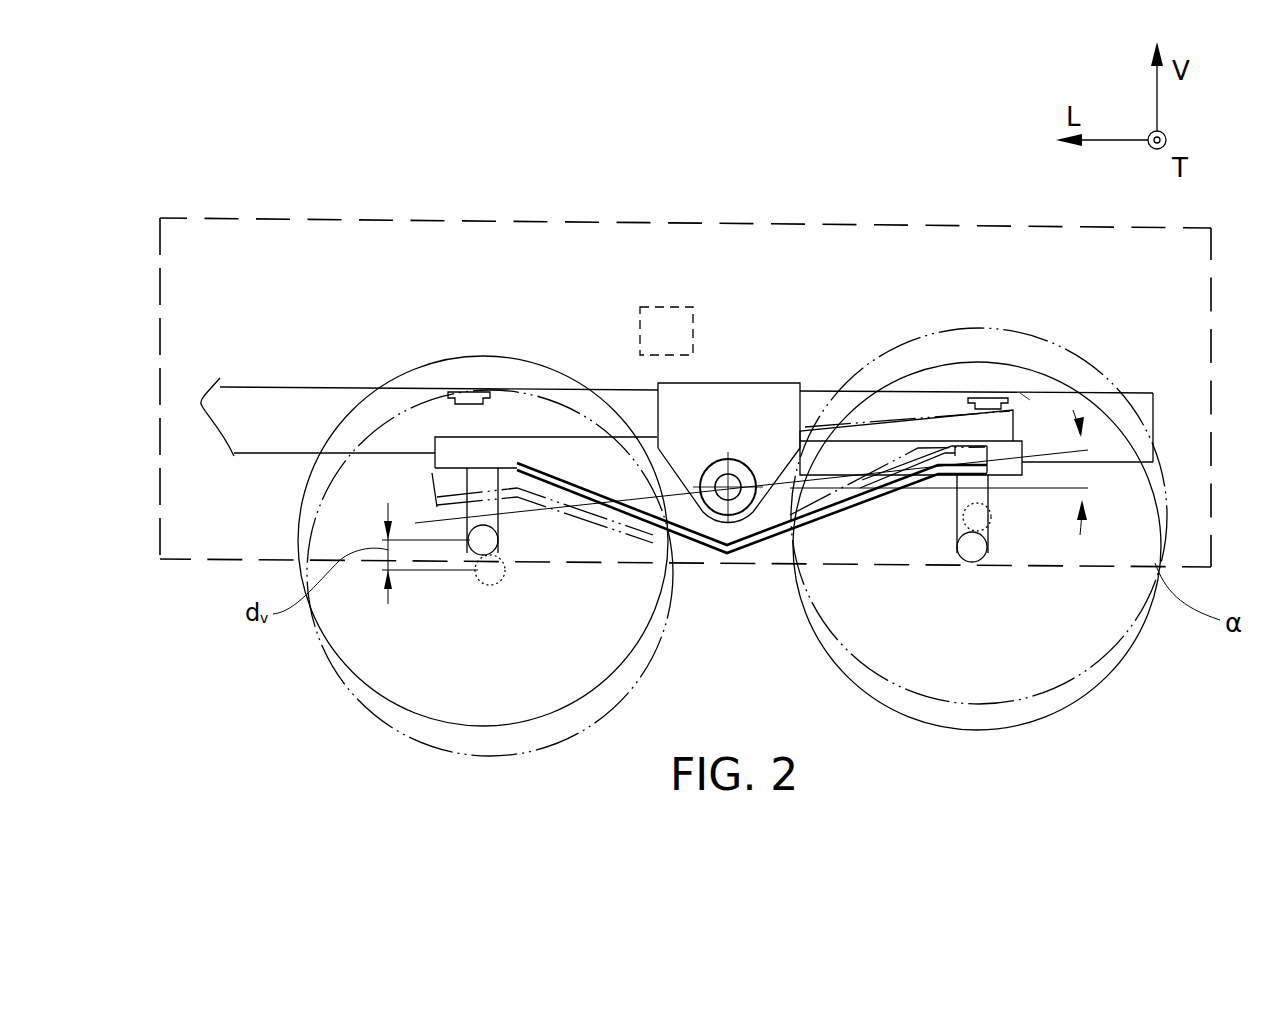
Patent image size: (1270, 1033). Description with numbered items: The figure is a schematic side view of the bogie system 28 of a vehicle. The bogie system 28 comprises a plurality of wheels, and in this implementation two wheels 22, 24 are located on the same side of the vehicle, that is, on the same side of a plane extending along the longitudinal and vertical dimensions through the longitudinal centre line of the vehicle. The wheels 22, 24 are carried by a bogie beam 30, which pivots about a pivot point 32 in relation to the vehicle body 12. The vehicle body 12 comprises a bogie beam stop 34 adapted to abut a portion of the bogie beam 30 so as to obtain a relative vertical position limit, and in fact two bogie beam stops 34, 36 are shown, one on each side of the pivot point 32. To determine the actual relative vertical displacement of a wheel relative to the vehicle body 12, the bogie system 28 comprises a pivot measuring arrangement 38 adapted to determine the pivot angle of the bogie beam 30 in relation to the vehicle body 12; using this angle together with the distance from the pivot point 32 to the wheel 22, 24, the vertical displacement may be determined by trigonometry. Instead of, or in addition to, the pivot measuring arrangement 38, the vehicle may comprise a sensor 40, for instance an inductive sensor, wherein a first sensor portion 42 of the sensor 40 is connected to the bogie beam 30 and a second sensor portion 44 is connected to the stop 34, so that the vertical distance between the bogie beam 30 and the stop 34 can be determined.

The vehicle body 12 is at (273, 210).
The wheel 22 is at (387, 700).
The wheel 24 is at (1110, 672).
The bogie system 28 is at (889, 262).
The bogie beam 30 is at (602, 470).
The pivot point 32 is at (747, 470).
The bogie beam stop 34 is at (990, 397).
The bogie beam stop 36 is at (463, 392).
The pivot measuring arrangement 38 is at (681, 343).
The sensor 40 is at (1030, 382).
The first sensor portion 42 is at (1040, 422).
The second sensor portion 44 is at (947, 377).